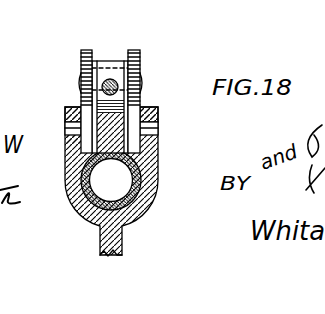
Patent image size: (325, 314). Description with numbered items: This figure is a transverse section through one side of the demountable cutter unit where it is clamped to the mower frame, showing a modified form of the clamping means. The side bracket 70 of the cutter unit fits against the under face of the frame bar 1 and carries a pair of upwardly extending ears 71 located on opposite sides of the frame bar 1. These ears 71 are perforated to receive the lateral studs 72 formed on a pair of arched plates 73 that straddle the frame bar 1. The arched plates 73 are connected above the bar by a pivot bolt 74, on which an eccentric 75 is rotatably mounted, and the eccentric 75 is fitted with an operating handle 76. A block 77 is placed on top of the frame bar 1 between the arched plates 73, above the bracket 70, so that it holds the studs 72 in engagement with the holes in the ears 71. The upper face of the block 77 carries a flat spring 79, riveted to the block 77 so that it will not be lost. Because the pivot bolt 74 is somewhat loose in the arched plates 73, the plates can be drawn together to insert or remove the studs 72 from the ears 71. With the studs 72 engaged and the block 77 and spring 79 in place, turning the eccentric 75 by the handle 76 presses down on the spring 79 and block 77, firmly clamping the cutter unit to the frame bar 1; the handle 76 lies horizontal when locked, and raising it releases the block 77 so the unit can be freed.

The frame bar 1 is at (106, 185).
The side bracket 70 is at (100, 242).
The upwardly extending ear 71 is at (74, 104).
The lateral stud 72 is at (68, 122).
The arched plate 73 is at (81, 52).
The pivot bolt 74 is at (80, 72).
The eccentric 75 is at (104, 59).
The operating handle 76 is at (114, 80).
The block 77 is at (86, 141).
The flat spring 79 is at (148, 92).